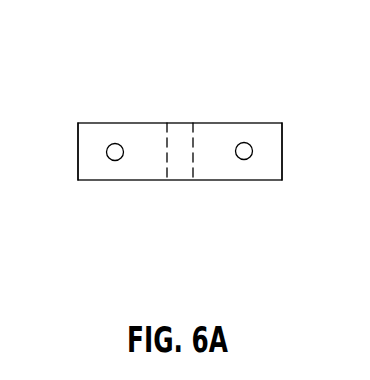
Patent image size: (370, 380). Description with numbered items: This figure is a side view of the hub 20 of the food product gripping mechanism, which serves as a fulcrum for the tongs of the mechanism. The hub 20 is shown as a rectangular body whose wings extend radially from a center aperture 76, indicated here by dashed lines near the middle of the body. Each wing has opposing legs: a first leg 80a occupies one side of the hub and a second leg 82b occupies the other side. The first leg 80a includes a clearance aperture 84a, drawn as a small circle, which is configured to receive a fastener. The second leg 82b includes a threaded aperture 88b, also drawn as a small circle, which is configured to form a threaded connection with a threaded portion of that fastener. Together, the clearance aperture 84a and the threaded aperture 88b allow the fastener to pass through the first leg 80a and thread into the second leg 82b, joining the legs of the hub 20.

The hub 20 is at (82, 78).
The center aperture 76 is at (195, 158).
The first leg 80a is at (95, 180).
The second leg 82b is at (263, 180).
The clearance aperture 84a is at (115, 143).
The threaded aperture 88b is at (245, 142).